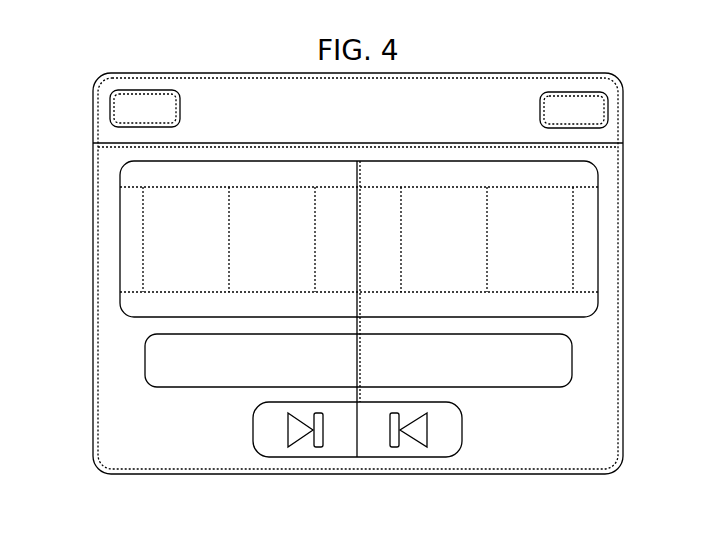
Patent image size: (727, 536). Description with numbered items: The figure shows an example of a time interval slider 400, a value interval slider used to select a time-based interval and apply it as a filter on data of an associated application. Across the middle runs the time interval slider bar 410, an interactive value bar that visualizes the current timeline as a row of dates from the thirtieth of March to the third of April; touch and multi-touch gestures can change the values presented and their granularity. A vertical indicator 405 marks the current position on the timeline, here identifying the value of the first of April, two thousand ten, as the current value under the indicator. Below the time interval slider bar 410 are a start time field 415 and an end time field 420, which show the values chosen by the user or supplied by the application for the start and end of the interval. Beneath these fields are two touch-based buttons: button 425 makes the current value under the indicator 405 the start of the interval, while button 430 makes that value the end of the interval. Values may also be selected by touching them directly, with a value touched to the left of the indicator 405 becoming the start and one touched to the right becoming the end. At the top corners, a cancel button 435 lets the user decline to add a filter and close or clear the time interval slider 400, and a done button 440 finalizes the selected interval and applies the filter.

The time interval slider 400 is at (484, 48).
The indicator 405 is at (356, 178).
The time interval slider bar 410 is at (114, 198).
The start time field 415 is at (138, 364).
The end time field 420 is at (487, 376).
The button 425 is at (307, 449).
The button 430 is at (407, 449).
The cancel button 435 is at (147, 91).
The done button 440 is at (576, 92).